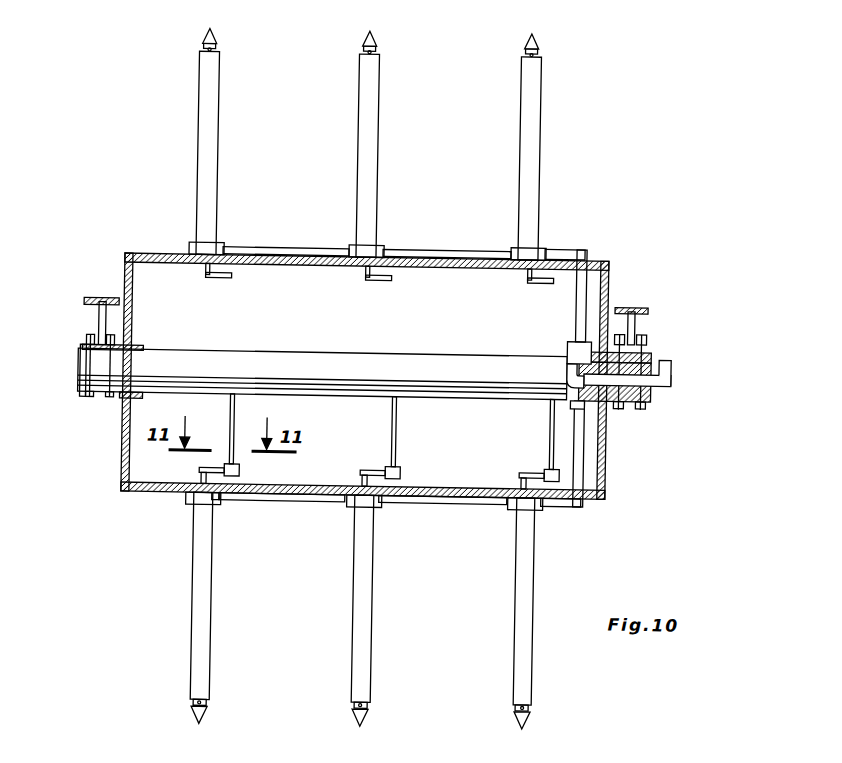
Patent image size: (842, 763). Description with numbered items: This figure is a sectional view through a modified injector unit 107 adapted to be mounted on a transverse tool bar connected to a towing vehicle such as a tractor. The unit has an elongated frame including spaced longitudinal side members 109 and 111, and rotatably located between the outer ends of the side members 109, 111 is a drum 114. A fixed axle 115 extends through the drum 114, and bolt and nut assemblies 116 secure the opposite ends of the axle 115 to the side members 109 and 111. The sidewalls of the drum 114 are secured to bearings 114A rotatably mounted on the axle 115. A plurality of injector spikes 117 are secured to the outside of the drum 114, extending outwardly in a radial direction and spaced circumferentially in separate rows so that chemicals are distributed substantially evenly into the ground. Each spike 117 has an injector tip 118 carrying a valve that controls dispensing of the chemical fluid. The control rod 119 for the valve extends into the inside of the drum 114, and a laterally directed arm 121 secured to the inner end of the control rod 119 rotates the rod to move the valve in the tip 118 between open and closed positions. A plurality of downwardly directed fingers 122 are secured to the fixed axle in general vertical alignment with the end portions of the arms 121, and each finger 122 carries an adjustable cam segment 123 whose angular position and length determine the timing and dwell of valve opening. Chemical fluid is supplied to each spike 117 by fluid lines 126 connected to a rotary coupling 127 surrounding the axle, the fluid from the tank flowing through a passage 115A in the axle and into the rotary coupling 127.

The injector unit 107 is at (152, 188).
The longitudinal side member 109 is at (97, 298).
The longitudinal side member 111 is at (640, 300).
The drum 114 is at (130, 490).
The bearing 114A is at (143, 345).
The fixed axle 115 is at (162, 369).
The passage 115A is at (622, 372).
The bolt and nut assembly 116 is at (88, 380).
The injector spike 117 is at (207, 123).
The injector tip 118 is at (211, 28).
The control rod 119 is at (203, 469).
The arm 121 is at (222, 498).
The finger 122 is at (233, 440).
The cam segment 123 is at (243, 470).
The fluid line 126 is at (580, 500).
The rotary coupling 127 is at (569, 344).